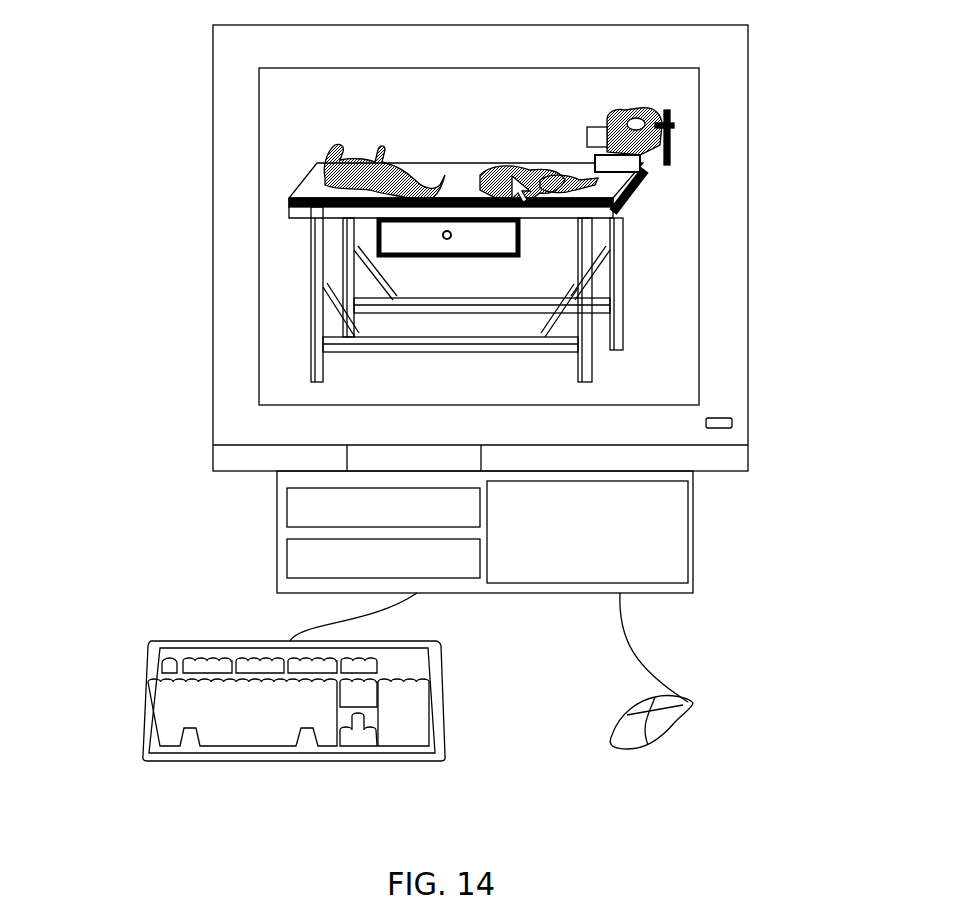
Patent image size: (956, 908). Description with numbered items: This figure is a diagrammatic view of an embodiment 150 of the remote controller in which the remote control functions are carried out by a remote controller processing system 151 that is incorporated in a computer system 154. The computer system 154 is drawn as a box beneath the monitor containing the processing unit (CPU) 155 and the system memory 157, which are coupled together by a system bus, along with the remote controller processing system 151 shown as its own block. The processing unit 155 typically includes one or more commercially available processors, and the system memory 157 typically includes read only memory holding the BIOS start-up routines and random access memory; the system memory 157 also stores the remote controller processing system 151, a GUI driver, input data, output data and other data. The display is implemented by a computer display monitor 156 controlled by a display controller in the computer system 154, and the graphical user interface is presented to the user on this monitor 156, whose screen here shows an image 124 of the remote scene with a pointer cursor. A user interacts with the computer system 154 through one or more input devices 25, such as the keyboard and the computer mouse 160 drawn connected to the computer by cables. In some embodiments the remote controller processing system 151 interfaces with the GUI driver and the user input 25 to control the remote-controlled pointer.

The embodiment of the remote controller 150 is at (110, 189).
The computer display monitor 156 is at (213, 92).
The image of remote manipulation site 124 is at (683, 217).
The computer system 154 is at (487, 593).
The processing unit 155 is at (287, 507).
The system memory 157 is at (287, 559).
The remote controller processing system 151 is at (690, 530).
The input devices 25 is at (746, 653).
The computer mouse 160 is at (625, 715).